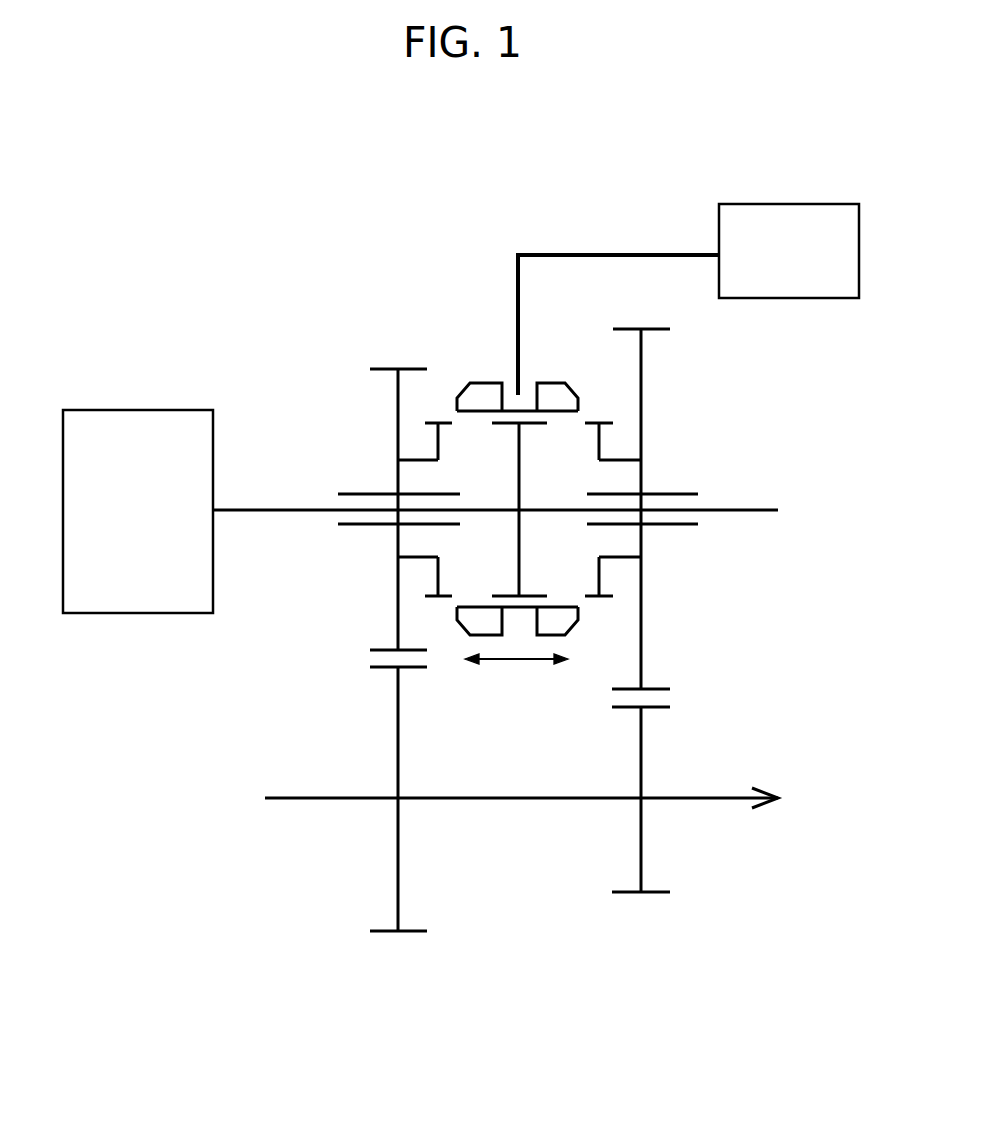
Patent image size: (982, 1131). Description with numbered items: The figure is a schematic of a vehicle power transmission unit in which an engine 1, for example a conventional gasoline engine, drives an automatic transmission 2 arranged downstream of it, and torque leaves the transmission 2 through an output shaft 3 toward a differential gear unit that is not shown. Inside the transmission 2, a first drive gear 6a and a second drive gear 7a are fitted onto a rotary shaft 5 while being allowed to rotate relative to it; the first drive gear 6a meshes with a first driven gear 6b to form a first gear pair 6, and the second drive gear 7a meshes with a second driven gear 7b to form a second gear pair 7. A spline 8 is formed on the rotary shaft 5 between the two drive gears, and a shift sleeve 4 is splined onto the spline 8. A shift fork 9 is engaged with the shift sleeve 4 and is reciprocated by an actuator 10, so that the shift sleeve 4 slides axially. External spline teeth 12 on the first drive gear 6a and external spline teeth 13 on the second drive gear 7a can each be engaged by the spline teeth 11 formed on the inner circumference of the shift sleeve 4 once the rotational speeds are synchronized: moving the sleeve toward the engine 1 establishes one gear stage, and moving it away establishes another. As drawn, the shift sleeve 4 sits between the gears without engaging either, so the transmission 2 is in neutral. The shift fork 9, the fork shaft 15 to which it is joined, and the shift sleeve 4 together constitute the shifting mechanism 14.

The engine 1 is at (137, 410).
The transmission 2 is at (354, 328).
The output shaft 3 is at (516, 798).
The shift sleeve 4 is at (517, 370).
The rotary shaft 5 is at (751, 510).
The first gear pair 6 is at (355, 650).
The first drive gear 6a is at (385, 649).
The first driven gear 6b is at (372, 688).
The second gear pair 7 is at (692, 610).
The second drive gear 7a is at (656, 688).
The second driven gear 7b is at (675, 727).
The spline 8 is at (537, 594).
The shift fork 9 is at (518, 285).
The actuator 10 is at (798, 204).
The spline teeth 11 is at (565, 412).
The spline teeth 12 is at (446, 425).
The spline teeth 13 is at (600, 423).
The shifting mechanism 14 is at (569, 299).
The fork shaft 15 is at (585, 254).